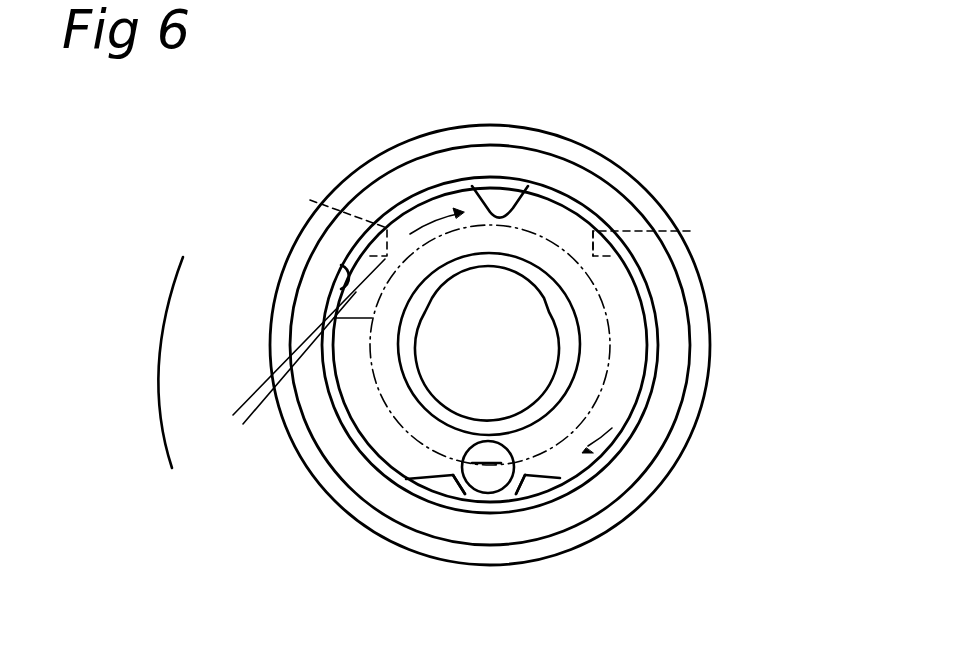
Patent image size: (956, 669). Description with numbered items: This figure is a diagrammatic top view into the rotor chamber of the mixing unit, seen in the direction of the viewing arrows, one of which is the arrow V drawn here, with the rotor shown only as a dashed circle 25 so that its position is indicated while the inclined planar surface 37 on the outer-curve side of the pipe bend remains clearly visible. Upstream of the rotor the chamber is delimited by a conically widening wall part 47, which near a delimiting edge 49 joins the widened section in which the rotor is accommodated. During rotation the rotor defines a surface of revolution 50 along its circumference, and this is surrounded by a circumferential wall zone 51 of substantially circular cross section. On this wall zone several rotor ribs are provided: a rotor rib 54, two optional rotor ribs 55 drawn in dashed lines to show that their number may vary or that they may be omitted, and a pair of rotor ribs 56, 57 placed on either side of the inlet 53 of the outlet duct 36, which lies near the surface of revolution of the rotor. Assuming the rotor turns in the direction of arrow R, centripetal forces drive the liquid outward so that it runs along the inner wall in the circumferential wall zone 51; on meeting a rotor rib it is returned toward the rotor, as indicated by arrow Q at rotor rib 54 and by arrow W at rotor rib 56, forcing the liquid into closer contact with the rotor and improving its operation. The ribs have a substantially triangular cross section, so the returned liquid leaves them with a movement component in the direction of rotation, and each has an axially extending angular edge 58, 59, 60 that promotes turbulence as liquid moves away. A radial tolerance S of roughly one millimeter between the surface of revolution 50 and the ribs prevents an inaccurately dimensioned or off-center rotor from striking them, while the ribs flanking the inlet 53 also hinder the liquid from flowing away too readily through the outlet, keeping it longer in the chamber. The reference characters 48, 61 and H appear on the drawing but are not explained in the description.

The rotor 25 is at (620, 263).
The outlet duct 36 is at (489, 476).
The planar surface 37 is at (592, 512).
The conically widening wall part 47 is at (553, 300).
The inner ring 48 is at (633, 483).
The edge 49 is at (625, 350).
The surface of revolution 50 is at (290, 304).
The circumferential wall zone 51 is at (341, 264).
The inlet 53 is at (468, 497).
The rotor rib 54 is at (488, 197).
The rotor rib 55 is at (311, 201).
The rotor rib 56 is at (500, 363).
The rotor rib 57 is at (424, 477).
The angular edge 58 is at (405, 255).
The angular edge 59 is at (518, 494).
The angular edge 60 is at (436, 477).
The hub ring 61 is at (575, 365).
The arrow Q is at (438, 223).
The arrow V is at (490, 12).
The horizontal direction H is at (830, 340).
The arrow R is at (153, 365).
The radial tolerance S is at (198, 377).
The arrow W is at (612, 460).